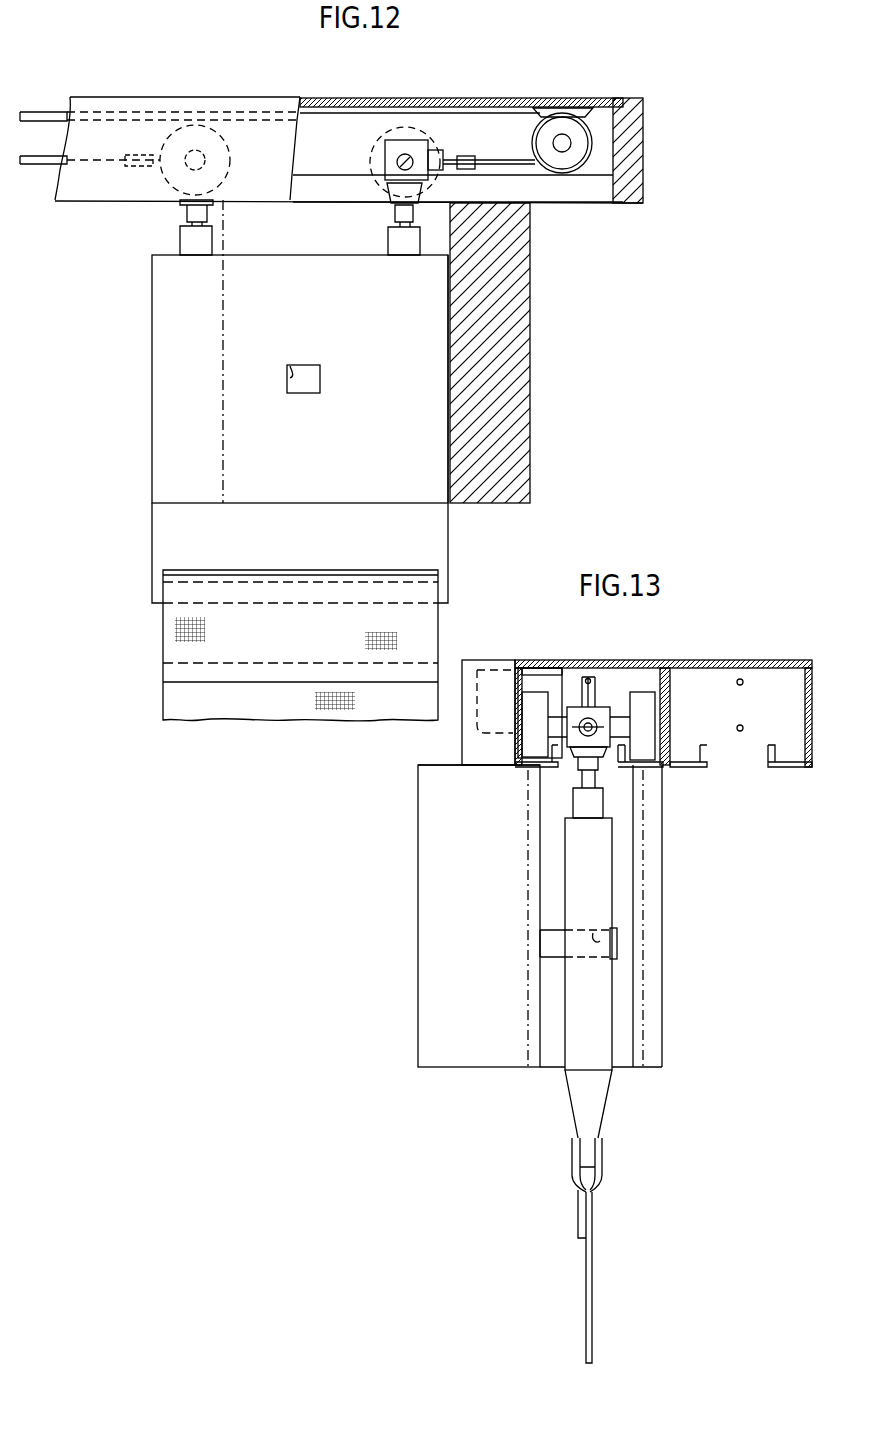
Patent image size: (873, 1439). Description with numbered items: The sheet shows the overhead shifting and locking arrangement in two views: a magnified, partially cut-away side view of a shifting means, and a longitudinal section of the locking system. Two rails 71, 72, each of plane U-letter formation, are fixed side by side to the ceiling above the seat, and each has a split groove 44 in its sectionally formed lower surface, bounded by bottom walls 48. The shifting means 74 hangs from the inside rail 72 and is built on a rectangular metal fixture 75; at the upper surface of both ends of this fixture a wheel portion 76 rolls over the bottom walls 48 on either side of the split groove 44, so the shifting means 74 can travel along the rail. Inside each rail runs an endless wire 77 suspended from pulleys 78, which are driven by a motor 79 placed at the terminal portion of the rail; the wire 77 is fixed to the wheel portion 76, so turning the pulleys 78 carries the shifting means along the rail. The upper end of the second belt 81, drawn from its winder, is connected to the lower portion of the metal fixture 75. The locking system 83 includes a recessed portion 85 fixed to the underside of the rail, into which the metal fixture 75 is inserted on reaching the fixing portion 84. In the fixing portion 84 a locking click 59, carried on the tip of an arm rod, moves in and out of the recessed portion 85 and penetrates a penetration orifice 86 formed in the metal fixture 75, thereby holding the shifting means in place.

In FIG. 12, the split groove 44 is at (574, 190).
In FIG. 13, the split groove 44 is at (617, 760).
In FIG. 13, the bottom walls 48 is at (545, 765).
In FIG. 12, the locking click 59 is at (293, 385).
In FIG. 13, the locking click 59 is at (618, 940).
In FIG. 13, the rail 71 is at (793, 663).
In FIG. 12, the rail 72 is at (497, 100).
In FIG. 13, the rail 72 is at (545, 663).
In FIG. 12, the shifting means 74 is at (147, 254).
In FIG. 13, the shifting means 74 is at (610, 703).
In FIG. 12, the metal fixture 75 is at (170, 446).
In FIG. 13, the metal fixture 75 is at (576, 1093).
In FIG. 12, the wheel portion 76 is at (186, 133).
In FIG. 13, the wheel portion 76 is at (530, 703).
In FIG. 12, the endless wire 77 is at (322, 110).
In FIG. 13, the endless wire 77 is at (589, 678).
In FIG. 12, the pulley 78 is at (565, 127).
In FIG. 12, the motor 79 is at (592, 118).
In FIG. 13, the motor 79 is at (560, 688).
In FIG. 12, the second belt 81 is at (275, 697).
In FIG. 13, the second belt 81 is at (587, 1272).
In FIG. 12, the locking system 83 is at (535, 445).
In FIG. 13, the locking system 83 is at (440, 756).
In FIG. 13, the fixing portion 84 is at (437, 898).
In FIG. 12, the recessed portion 85 is at (446, 350).
In FIG. 13, the recessed portion 85 is at (542, 845).
In FIG. 12, the penetration orifice 86 is at (292, 377).
In FIG. 13, the penetration orifice 86 is at (622, 935).